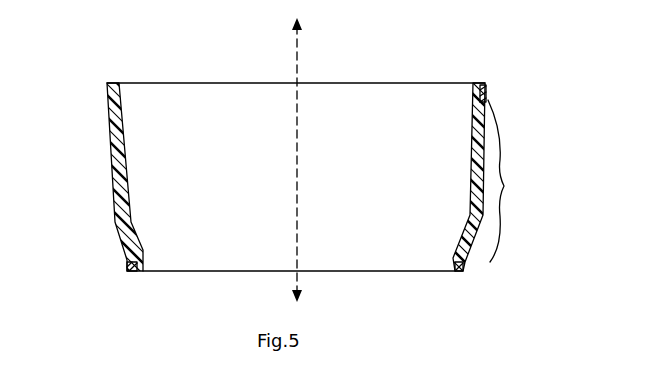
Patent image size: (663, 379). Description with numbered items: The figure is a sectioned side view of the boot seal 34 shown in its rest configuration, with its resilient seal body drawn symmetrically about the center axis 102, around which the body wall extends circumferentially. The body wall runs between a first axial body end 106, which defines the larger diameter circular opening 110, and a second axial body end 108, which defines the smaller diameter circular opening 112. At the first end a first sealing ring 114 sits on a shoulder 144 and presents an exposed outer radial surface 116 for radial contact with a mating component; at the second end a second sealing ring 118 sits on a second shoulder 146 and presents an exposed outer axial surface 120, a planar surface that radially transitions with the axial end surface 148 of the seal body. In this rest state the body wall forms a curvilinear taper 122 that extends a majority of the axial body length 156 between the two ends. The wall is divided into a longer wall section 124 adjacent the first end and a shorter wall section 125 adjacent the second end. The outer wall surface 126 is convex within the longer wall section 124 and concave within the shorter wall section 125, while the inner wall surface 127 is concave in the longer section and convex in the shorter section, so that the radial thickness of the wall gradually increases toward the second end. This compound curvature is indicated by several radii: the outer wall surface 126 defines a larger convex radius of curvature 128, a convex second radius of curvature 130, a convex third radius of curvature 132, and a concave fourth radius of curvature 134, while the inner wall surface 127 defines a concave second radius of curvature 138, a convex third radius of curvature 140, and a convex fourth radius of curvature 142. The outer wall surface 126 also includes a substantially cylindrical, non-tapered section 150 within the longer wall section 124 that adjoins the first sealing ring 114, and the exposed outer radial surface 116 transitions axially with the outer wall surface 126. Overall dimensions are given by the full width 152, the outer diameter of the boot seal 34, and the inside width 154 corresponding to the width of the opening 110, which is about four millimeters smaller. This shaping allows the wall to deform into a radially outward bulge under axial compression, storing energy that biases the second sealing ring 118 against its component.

The boot seal 34 is at (562, 161).
The center axis 102 is at (297, 166).
The first axial body end 106 is at (491, 98).
The second axial body end 108 is at (468, 268).
The larger diameter circular opening 110 is at (120, 86).
The smaller diameter circular opening 112 is at (455, 273).
The first sealing ring 114 is at (487, 82).
The exposed outer radial surface 116 is at (486, 88).
The second sealing ring 118 is at (130, 273).
The exposed outer axial surface 120 is at (460, 273).
The curvilinear taper 122 is at (514, 181).
The longer wall section 124 is at (120, 170).
The shorter wall section 125 is at (455, 248).
The outer wall surface 126 is at (472, 148).
The inner wall surface 127 is at (470, 188).
The larger radius of curvature 128 is at (106, 184).
The second radius of curvature 130 is at (110, 238).
The third radius of curvature 132 is at (115, 250).
The fourth radius of curvature 134 is at (122, 258).
The second, concave radius of curvature 138 is at (138, 232).
The third, convex radius of curvature 140 is at (148, 250).
The fourth, convex radius of curvature 142 is at (151, 263).
The shoulder 144 is at (487, 100).
The second shoulder 146 is at (454, 265).
The axial end surface 148 is at (140, 273).
The substantially cylindrical, non-tapered section 150 is at (102, 106).
The full width 152 is at (485, 45).
The inside width 154 is at (119, 62).
The axial body length 156 is at (49, 85).